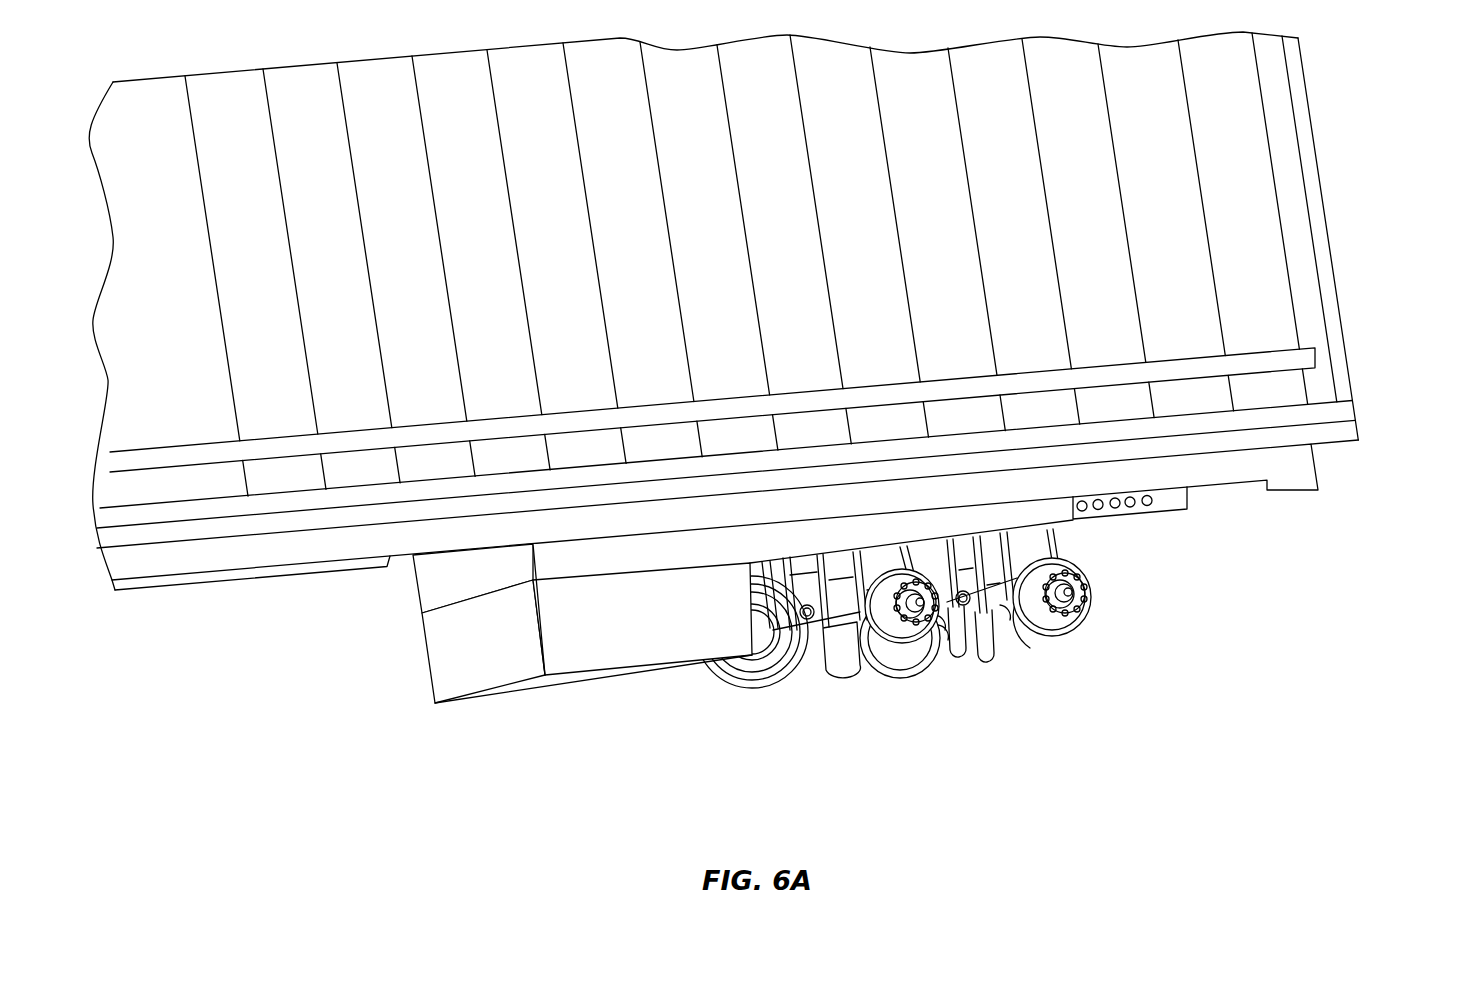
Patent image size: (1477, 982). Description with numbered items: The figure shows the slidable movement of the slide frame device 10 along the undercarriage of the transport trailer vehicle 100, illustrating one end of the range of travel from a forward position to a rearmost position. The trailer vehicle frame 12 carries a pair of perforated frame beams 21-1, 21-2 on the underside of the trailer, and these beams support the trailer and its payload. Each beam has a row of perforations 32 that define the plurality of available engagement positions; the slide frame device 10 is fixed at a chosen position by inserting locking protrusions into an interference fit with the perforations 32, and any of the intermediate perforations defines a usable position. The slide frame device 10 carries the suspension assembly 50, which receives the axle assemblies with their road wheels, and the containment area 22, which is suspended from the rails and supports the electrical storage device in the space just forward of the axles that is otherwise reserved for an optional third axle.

The transport trailer vehicle 100 is at (1315, 152).
The trailer vehicle frame 12 is at (338, 632).
The perforated frame beam 21-1 is at (1238, 487).
The perforated frame beam 21-2 is at (1180, 508).
The perforations 32 is at (1130, 507).
The slide frame device 10 is at (893, 680).
The suspension assembly 50 is at (998, 680).
The containment area 22 is at (405, 701).